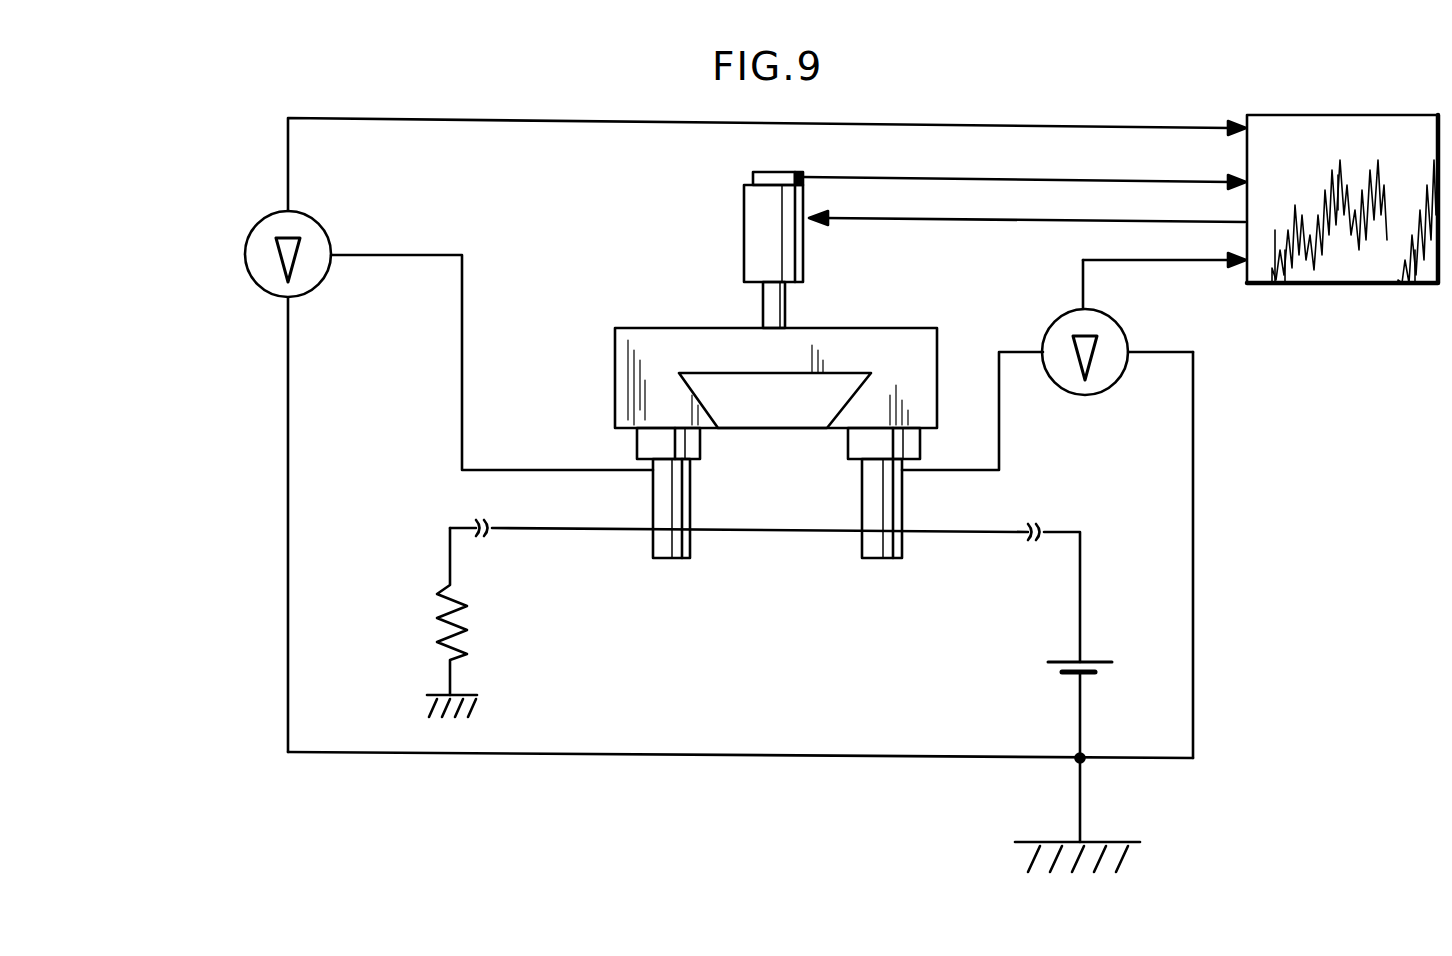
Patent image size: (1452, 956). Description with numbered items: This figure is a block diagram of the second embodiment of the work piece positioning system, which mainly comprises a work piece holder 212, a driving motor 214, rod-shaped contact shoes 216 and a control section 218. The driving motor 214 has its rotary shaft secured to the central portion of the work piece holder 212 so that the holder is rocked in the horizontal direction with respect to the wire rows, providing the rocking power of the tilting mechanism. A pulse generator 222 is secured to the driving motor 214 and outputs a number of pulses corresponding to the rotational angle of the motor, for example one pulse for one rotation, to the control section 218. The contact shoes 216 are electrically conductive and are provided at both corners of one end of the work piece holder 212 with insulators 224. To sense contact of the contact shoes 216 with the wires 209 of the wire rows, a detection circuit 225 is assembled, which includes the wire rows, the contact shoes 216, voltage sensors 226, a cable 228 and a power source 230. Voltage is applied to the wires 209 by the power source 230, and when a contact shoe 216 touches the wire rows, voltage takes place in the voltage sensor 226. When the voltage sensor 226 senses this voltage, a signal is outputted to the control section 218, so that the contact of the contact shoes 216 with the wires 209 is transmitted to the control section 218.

The wires 209 is at (527, 532).
The work piece holder 212 is at (888, 360).
The driving motor 214 is at (770, 226).
The rod-shaped contact shoes 216 is at (668, 555).
The control section 218 is at (1368, 262).
The pulse generator 222 is at (774, 176).
The insulators 224 is at (655, 439).
The detection circuit 225 is at (270, 479).
The voltage sensors 226 is at (246, 240).
The cable 228 is at (462, 365).
The power source 230 is at (1098, 670).